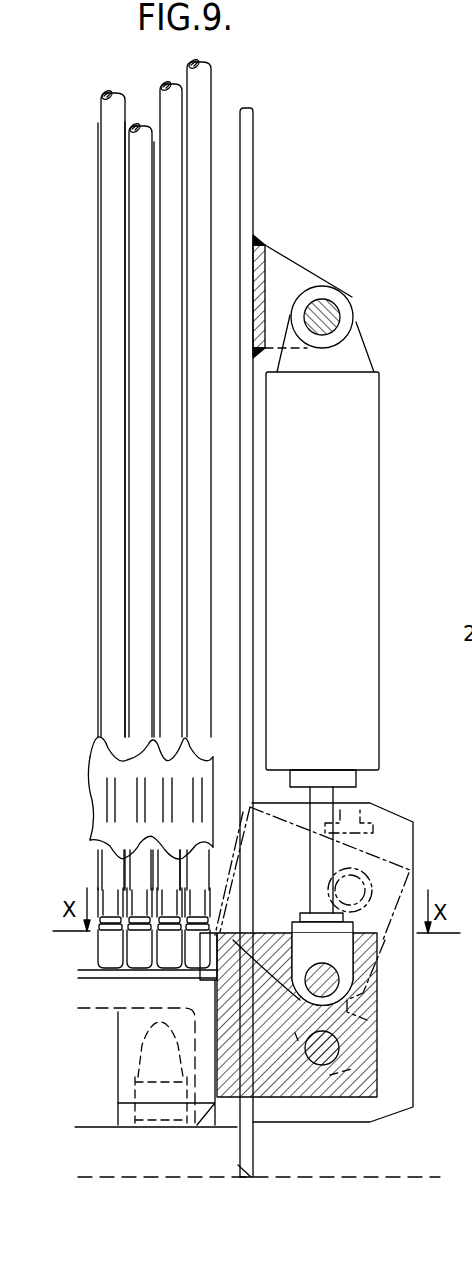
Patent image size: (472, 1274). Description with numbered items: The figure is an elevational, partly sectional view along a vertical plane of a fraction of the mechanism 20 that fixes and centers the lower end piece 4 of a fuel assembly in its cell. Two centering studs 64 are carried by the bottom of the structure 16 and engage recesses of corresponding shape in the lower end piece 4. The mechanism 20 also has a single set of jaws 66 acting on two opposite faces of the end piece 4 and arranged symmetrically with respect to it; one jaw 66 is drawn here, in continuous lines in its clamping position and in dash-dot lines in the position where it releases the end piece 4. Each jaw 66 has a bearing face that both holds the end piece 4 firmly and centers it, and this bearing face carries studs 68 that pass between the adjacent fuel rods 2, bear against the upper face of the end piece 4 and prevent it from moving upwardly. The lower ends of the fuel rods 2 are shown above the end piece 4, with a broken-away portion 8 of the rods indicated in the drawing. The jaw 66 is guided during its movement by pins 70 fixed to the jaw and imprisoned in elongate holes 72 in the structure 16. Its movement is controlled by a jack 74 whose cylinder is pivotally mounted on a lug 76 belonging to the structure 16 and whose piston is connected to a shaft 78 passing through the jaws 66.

The fuel rods 2 is at (163, 567).
The lower end piece 4 is at (127, 1032).
The tube support panel 8 is at (104, 753).
The structure 16 is at (249, 194).
The mechanism 20 is at (377, 356).
The centering studs 64 is at (133, 1062).
The jaw 66 is at (343, 1077).
The studs 68 is at (200, 948).
The pins 70 is at (327, 1048).
The elongate holes 72 is at (293, 1040).
The jack 74 is at (356, 542).
The lug 76 is at (290, 280).
The shaft 78 is at (277, 972).